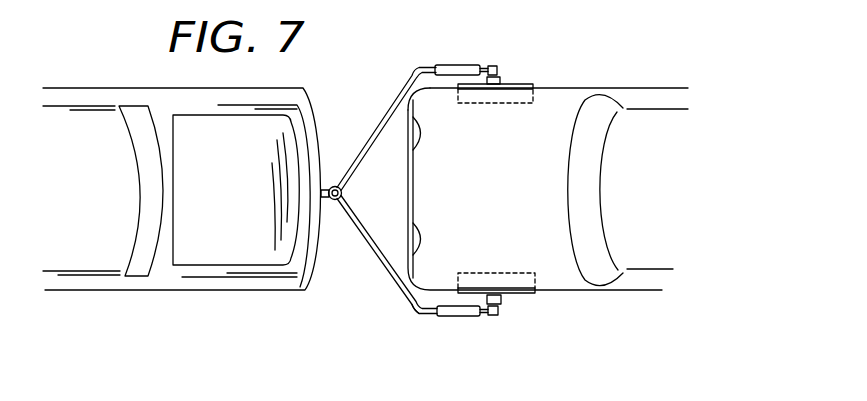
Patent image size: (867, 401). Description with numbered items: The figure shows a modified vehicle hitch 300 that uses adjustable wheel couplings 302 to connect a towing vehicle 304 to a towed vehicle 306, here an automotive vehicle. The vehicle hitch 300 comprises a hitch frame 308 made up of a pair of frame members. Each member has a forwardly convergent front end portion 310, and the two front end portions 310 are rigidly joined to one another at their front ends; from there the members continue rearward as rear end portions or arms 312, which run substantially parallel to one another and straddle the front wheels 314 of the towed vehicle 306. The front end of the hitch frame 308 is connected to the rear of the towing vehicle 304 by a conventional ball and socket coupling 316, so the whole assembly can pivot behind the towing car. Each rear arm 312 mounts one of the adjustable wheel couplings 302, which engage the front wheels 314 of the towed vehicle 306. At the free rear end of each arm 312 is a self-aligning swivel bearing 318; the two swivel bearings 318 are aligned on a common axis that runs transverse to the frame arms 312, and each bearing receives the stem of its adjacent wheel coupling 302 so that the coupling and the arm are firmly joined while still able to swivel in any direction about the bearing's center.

The vehicle hitch 300 is at (462, 178).
The wheel coupling 302 is at (506, 81).
The towing vehicle 304 is at (104, 87).
The towed vehicle 306 is at (641, 88).
The hitch frame 308 is at (415, 316).
The front end portions 310 is at (400, 97).
The rear end portions or arms 312 is at (452, 316).
The front wheels 314 is at (524, 85).
The ball and socket coupling 316 is at (337, 185).
The self-aligning swivel bearing 318 is at (493, 63).